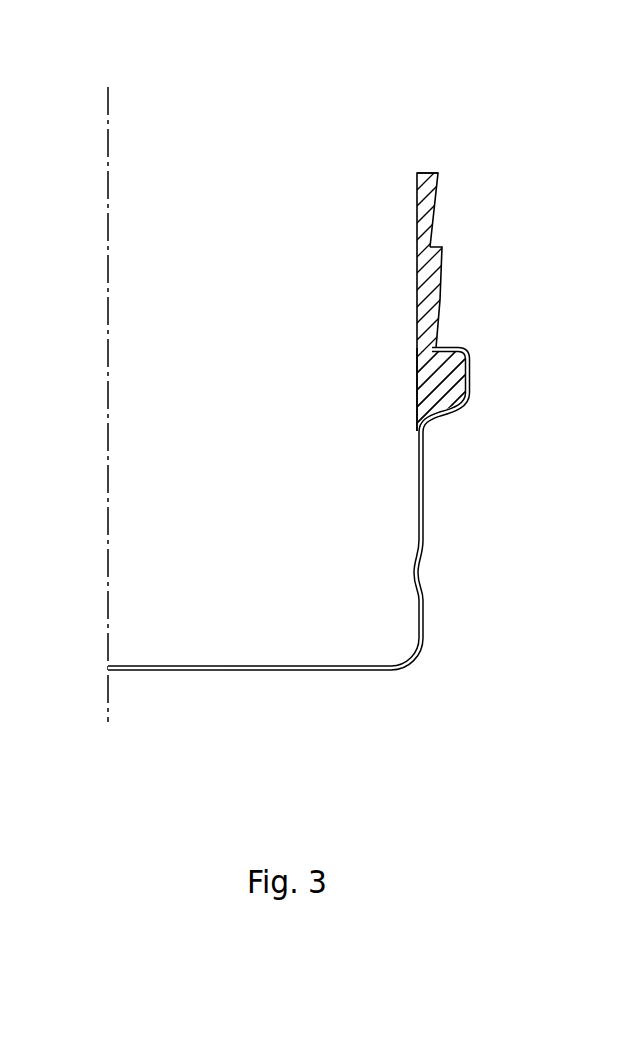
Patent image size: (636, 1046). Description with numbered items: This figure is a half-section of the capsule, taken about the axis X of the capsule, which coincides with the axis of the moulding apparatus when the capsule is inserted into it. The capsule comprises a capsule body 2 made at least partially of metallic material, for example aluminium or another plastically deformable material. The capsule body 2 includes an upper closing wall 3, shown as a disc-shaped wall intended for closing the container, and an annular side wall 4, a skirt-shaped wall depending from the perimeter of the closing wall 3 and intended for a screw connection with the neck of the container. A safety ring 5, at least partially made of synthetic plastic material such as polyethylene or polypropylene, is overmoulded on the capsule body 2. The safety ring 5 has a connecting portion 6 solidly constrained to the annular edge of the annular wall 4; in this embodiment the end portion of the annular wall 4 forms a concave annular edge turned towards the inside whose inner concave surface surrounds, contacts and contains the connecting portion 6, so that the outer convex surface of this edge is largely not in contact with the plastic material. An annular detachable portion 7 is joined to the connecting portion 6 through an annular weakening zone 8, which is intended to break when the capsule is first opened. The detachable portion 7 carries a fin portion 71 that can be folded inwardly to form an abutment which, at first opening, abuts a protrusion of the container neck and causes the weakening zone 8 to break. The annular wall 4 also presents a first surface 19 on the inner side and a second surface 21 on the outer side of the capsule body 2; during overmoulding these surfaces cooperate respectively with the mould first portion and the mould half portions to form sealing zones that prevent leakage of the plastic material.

The axis X is at (108, 138).
The capsule body 2 is at (303, 671).
The upper closing wall 3 is at (158, 671).
The annular side wall 4 is at (423, 548).
The safety ring 5 is at (437, 310).
The connecting portion 6 is at (430, 372).
The annular detachable portion 7 is at (425, 285).
The annular weakening zone 8 is at (433, 346).
The first surface 19 is at (418, 435).
The second surface 21 is at (457, 349).
The fin portion 71 is at (436, 196).